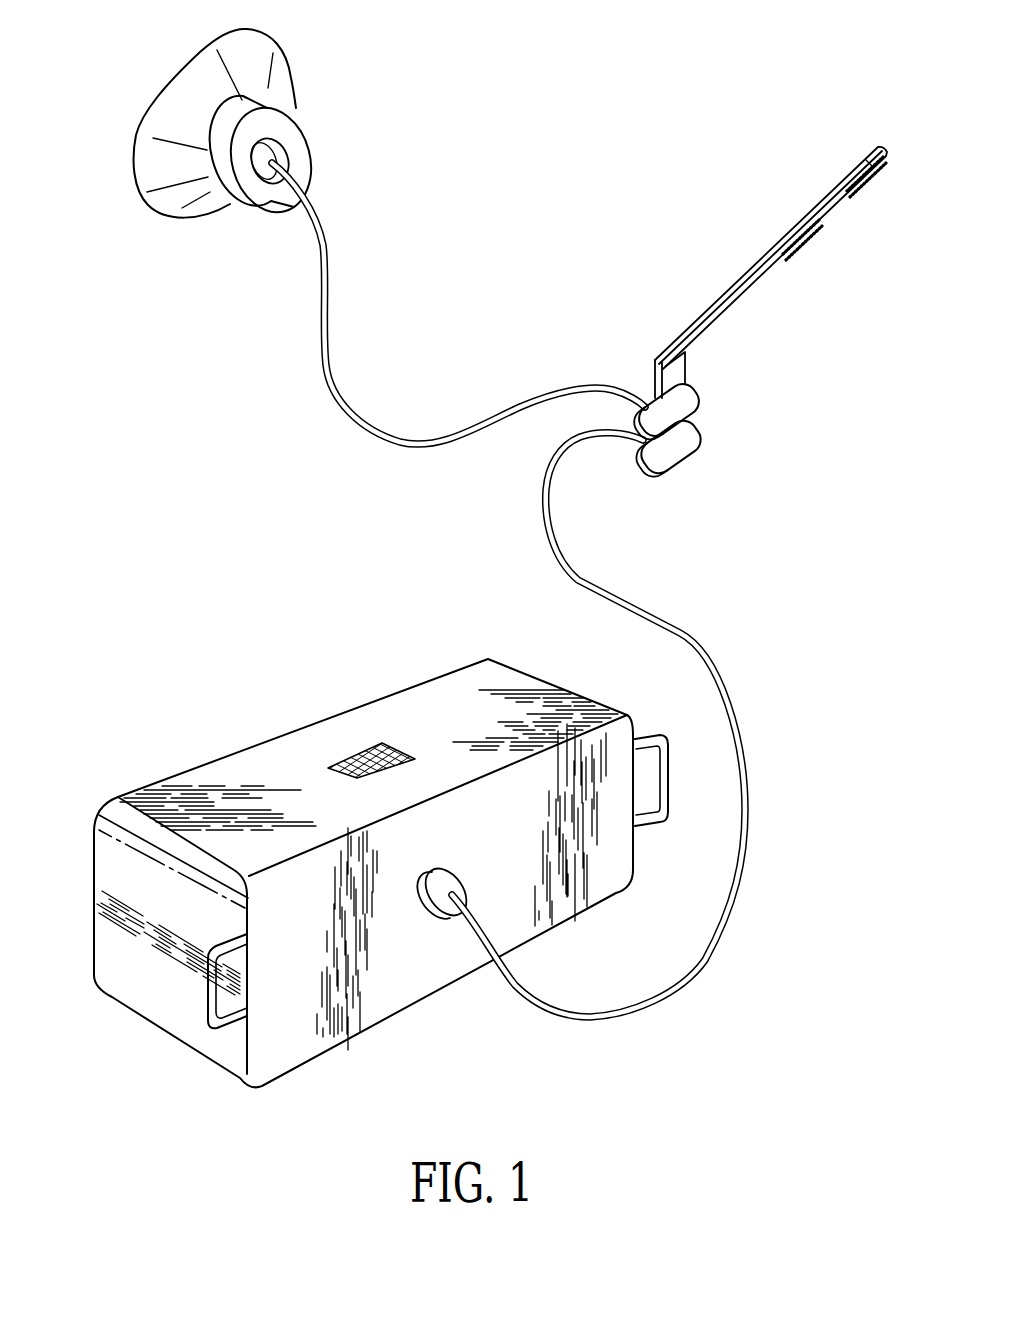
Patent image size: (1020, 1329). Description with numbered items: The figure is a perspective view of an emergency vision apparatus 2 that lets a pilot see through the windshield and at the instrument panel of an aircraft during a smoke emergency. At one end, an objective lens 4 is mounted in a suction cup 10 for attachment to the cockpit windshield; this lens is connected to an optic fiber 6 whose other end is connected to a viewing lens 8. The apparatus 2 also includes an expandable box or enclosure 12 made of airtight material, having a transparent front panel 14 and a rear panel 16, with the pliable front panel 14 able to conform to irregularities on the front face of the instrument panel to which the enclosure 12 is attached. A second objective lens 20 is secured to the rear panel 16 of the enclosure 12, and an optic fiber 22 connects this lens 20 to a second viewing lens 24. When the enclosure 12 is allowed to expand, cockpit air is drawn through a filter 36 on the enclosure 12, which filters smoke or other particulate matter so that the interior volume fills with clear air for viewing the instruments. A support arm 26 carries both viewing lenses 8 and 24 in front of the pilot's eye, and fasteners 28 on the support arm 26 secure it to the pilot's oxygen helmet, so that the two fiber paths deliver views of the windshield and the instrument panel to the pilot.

The emergency vision apparatus 2 is at (538, 201).
The objective lens 4 is at (287, 148).
The optic fiber 6 is at (328, 268).
The viewing lens 8 is at (687, 403).
The suction cup 10 is at (143, 157).
The expandable box or enclosure 12 is at (228, 745).
The transparent front panel 14 is at (303, 726).
The rear panel 16 is at (368, 1003).
The objective lens 20 is at (443, 910).
The optic fiber 22 is at (715, 942).
The viewing lens 24 is at (677, 457).
The support arm 26 is at (720, 298).
The fasteners 28 is at (860, 187).
The filter 36 is at (395, 745).